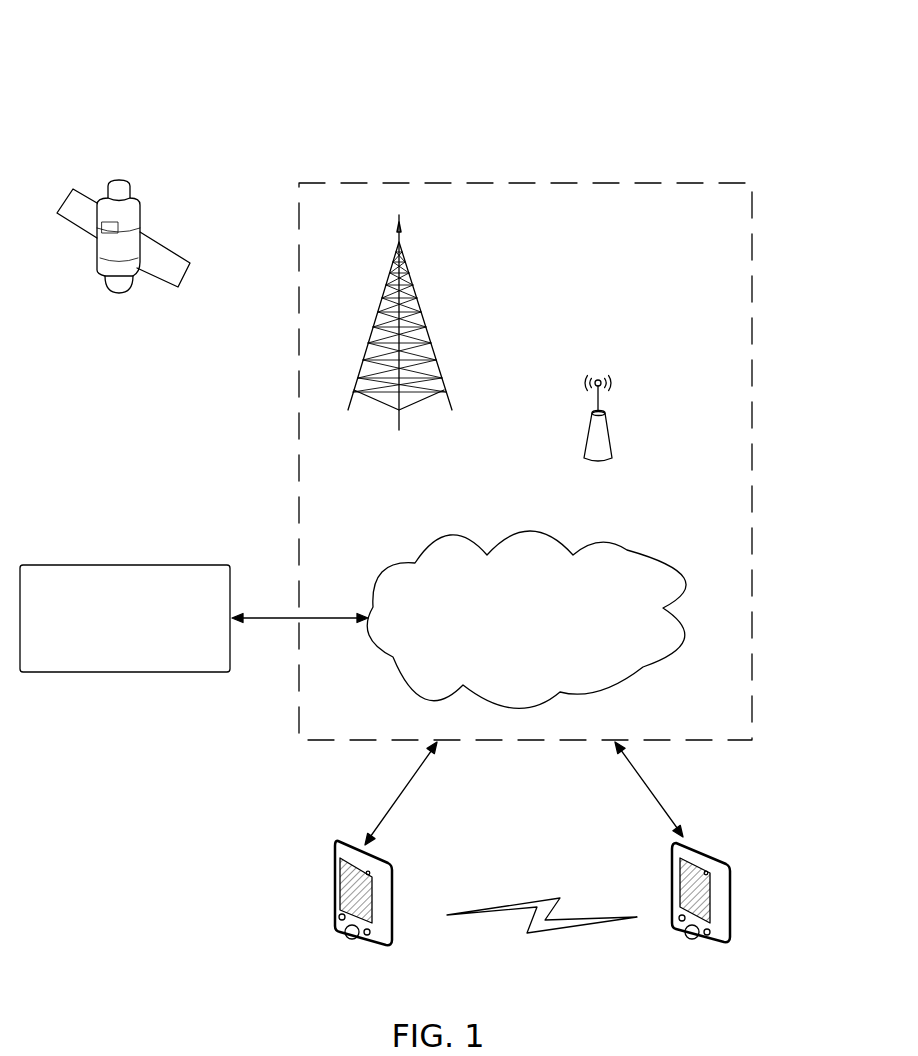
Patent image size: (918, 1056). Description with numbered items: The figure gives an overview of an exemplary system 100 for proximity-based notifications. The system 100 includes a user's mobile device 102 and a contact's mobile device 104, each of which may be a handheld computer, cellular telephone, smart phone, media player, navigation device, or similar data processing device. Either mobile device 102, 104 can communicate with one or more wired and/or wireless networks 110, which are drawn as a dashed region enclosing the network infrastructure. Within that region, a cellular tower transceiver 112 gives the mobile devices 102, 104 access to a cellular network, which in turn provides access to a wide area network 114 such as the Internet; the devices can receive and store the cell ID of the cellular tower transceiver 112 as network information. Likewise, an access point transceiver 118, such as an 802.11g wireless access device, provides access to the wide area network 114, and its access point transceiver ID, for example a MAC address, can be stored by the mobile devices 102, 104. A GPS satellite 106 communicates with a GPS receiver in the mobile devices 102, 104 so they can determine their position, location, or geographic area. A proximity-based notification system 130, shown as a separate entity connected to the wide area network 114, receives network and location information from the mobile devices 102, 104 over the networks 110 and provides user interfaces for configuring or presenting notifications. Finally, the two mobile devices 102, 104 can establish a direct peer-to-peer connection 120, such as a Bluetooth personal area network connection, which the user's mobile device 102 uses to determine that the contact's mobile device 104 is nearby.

The system 100 is at (108, 73).
The user's mobile device 102 is at (388, 867).
The contact's mobile device 104 is at (728, 867).
The GPS satellite 106 is at (142, 200).
The wired and/or wireless networks 110 is at (752, 218).
The cellular tower transceiver 112 is at (442, 375).
The wide area network 114 is at (627, 550).
The access point transceiver 118 is at (610, 442).
The peer-to-peer connection 120 is at (543, 898).
The proximity-based notification system 130 is at (88, 565).